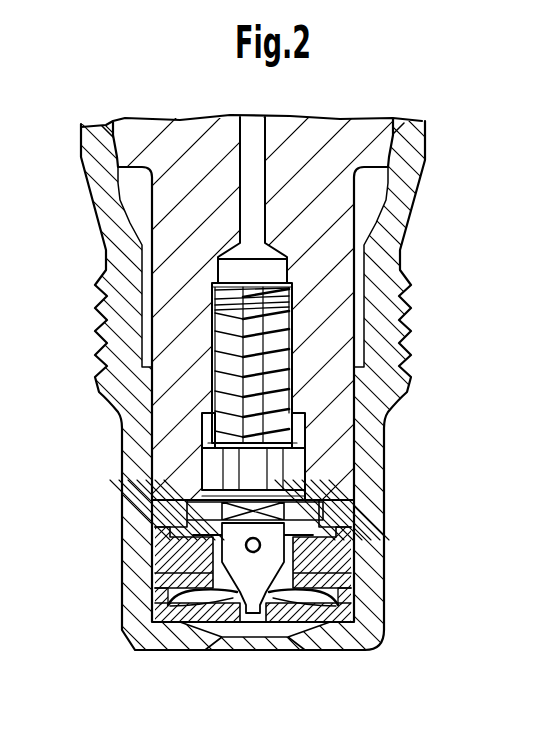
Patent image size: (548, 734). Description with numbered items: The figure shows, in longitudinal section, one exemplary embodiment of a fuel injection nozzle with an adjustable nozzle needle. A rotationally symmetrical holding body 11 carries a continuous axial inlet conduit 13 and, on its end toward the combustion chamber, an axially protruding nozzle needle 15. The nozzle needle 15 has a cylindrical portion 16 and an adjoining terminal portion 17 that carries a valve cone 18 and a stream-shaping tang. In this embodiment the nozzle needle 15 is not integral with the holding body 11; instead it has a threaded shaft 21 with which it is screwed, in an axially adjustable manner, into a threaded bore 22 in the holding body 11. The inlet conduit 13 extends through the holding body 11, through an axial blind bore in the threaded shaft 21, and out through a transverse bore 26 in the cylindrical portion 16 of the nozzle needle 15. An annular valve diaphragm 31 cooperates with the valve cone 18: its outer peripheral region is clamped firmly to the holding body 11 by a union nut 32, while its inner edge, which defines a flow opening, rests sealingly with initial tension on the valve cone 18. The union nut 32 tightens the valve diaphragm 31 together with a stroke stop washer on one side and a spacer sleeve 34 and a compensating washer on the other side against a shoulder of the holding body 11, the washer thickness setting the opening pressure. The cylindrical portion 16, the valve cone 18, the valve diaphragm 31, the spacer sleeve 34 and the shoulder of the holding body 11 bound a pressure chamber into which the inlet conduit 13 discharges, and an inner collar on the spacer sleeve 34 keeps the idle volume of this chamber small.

The holding body 11 is at (332, 198).
The inlet conduit 13 is at (247, 216).
The nozzle needle 15 is at (153, 540).
The cylindrical portion 16 is at (160, 572).
The terminal portion 17 is at (177, 650).
The valve cone 18 is at (160, 603).
The threaded shaft 21 is at (292, 381).
The threaded bore 22 is at (292, 295).
The transverse bore 26 is at (287, 547).
The valve diaphragm 31 is at (293, 613).
The union nut 32 is at (420, 147).
The spacer sleeve 34 is at (345, 573).